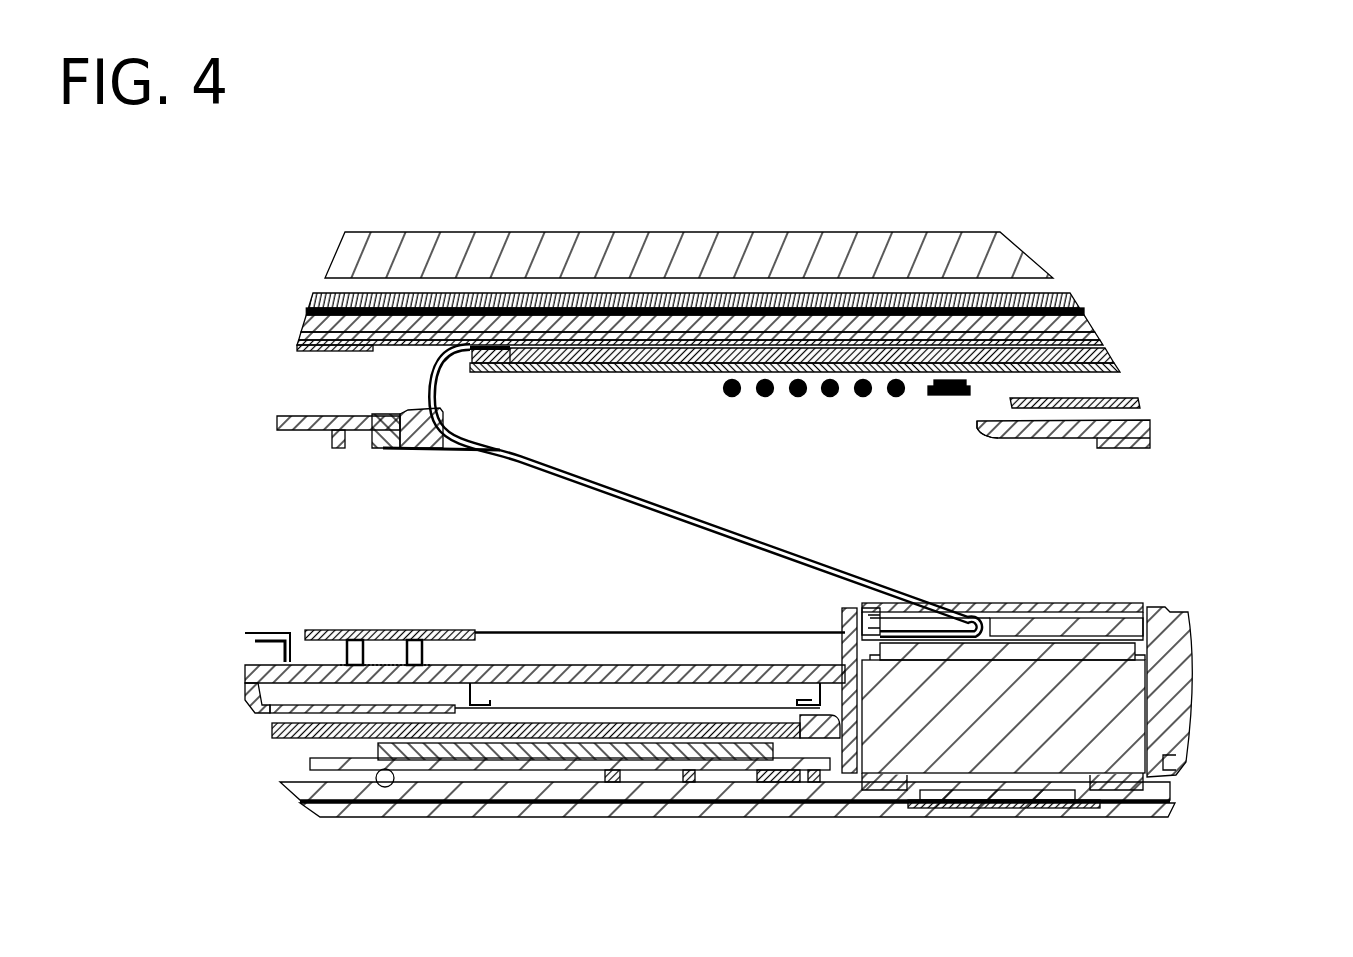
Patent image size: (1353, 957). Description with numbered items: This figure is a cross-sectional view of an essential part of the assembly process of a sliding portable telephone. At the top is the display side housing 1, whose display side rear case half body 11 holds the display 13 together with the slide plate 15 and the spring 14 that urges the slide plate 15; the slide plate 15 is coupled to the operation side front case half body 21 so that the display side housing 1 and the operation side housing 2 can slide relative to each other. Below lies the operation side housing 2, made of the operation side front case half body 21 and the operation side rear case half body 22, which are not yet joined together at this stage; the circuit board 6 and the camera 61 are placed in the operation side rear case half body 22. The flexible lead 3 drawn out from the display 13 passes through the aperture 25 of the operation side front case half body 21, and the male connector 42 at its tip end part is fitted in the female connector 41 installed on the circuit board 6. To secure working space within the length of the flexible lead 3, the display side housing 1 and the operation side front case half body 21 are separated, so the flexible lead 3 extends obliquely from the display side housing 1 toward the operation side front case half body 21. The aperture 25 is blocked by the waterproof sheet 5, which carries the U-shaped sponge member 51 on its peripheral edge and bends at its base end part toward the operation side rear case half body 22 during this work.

The display side housing 1 is at (760, 332).
The operation side housing 2 is at (1150, 595).
The flexible lead 3 is at (432, 372).
The waterproof sheet 5 is at (462, 452).
The circuit board 6 is at (628, 670).
The display side rear case half body 11 is at (1112, 352).
The display 13 is at (763, 243).
The spring 14 is at (830, 398).
The slide plate 15 is at (1120, 398).
The operation side front case half body 21 is at (1119, 454).
The operation side rear case half body 22 is at (1209, 692).
The aperture 25 is at (977, 430).
The female connector 41 is at (425, 650).
The male connector 42 is at (373, 645).
The sponge member 51 is at (940, 603).
The camera 61 is at (990, 772).